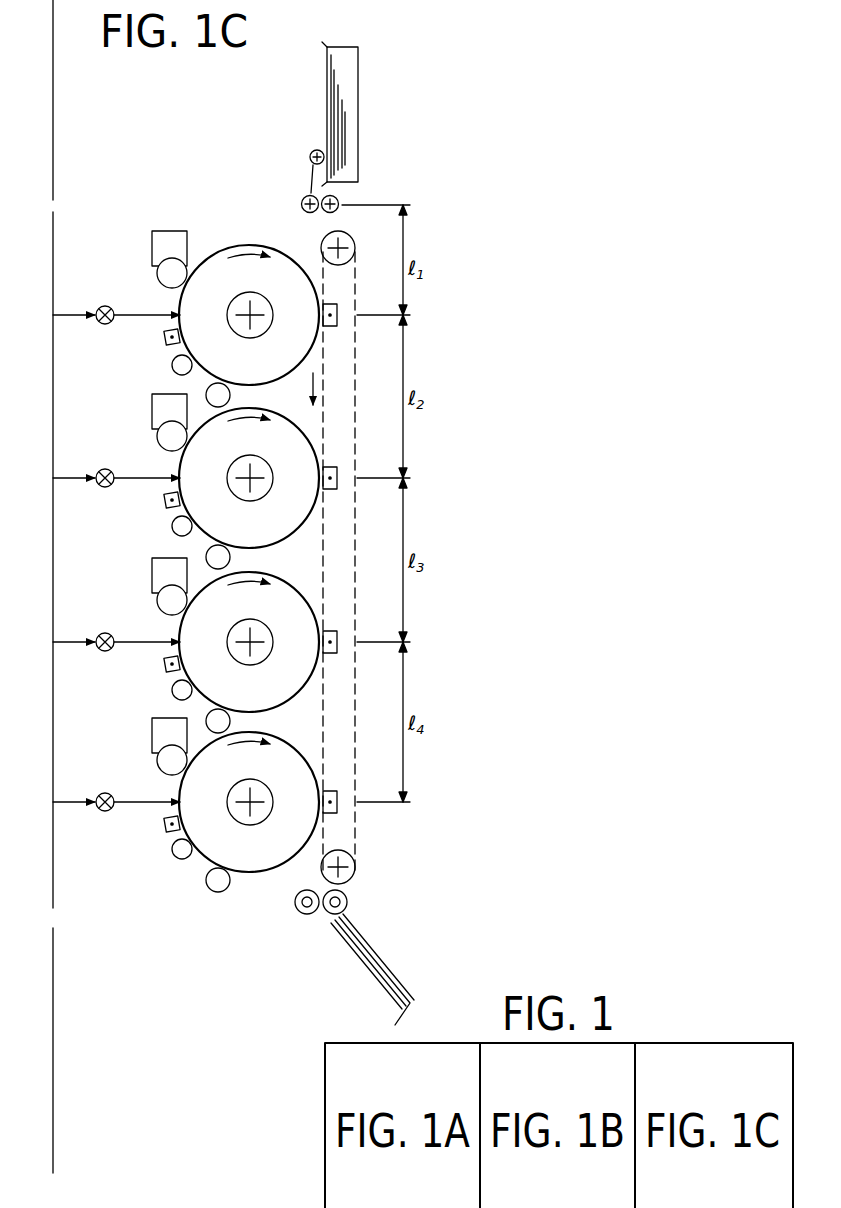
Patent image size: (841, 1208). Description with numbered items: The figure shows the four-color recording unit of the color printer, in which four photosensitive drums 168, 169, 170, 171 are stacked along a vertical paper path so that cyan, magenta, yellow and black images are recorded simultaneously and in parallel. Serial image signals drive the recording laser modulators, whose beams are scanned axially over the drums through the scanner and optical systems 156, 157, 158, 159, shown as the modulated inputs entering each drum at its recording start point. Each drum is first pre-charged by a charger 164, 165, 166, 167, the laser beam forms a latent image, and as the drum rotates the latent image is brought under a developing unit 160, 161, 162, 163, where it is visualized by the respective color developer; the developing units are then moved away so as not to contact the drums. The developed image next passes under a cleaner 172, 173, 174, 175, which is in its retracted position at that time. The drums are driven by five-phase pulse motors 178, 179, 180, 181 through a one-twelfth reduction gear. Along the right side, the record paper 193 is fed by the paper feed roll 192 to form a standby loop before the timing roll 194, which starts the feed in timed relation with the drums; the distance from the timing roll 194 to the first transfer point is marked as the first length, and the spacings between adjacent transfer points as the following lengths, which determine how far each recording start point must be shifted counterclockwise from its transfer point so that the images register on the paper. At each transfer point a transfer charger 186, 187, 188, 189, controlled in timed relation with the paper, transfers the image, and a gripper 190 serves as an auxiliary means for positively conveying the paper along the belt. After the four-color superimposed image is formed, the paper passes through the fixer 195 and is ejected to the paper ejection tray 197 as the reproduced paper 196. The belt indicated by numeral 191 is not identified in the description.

The scanner and optical system 156 is at (104, 306).
The scanner and optical system 157 is at (104, 469).
The scanner and optical system 158 is at (104, 633).
The scanner and optical system 159 is at (104, 793).
The developing unit 160 is at (170, 231).
The developing unit 161 is at (152, 403).
The developing unit 162 is at (152, 565).
The developing unit 163 is at (152, 720).
The charger 164 is at (165, 337).
The charger 165 is at (165, 498).
The charger 166 is at (165, 664).
The charger 167 is at (165, 822).
The photosensitive drum 168 is at (245, 245).
The photosensitive drum 169 is at (300, 432).
The photosensitive drum 170 is at (296, 580).
The photosensitive drum 171 is at (294, 741).
The cleaner 172 is at (172, 366).
The cleaner 173 is at (172, 526).
The cleaner 174 is at (172, 690).
The cleaner 175 is at (172, 850).
The 5-phase pulse motor 178 is at (250, 330).
The 5-phase pulse motor 179 is at (250, 493).
The 5-phase pulse motor 180 is at (250, 657).
The 5-phase pulse motor 181 is at (250, 817).
The transfer charger 186 is at (337, 320).
The transfer charger 187 is at (337, 478).
The transfer charger 188 is at (337, 633).
The transfer charger 189 is at (337, 808).
The gripper 190 is at (322, 244).
The transfer belt 191 is at (324, 562).
The paper feed roll 192 is at (311, 153).
The record paper 193 is at (327, 72).
The timing roll 194 is at (310, 196).
The fixer 195 is at (296, 902).
The reproduced paper 196 is at (350, 960).
The paper ejection tray 197 is at (360, 955).